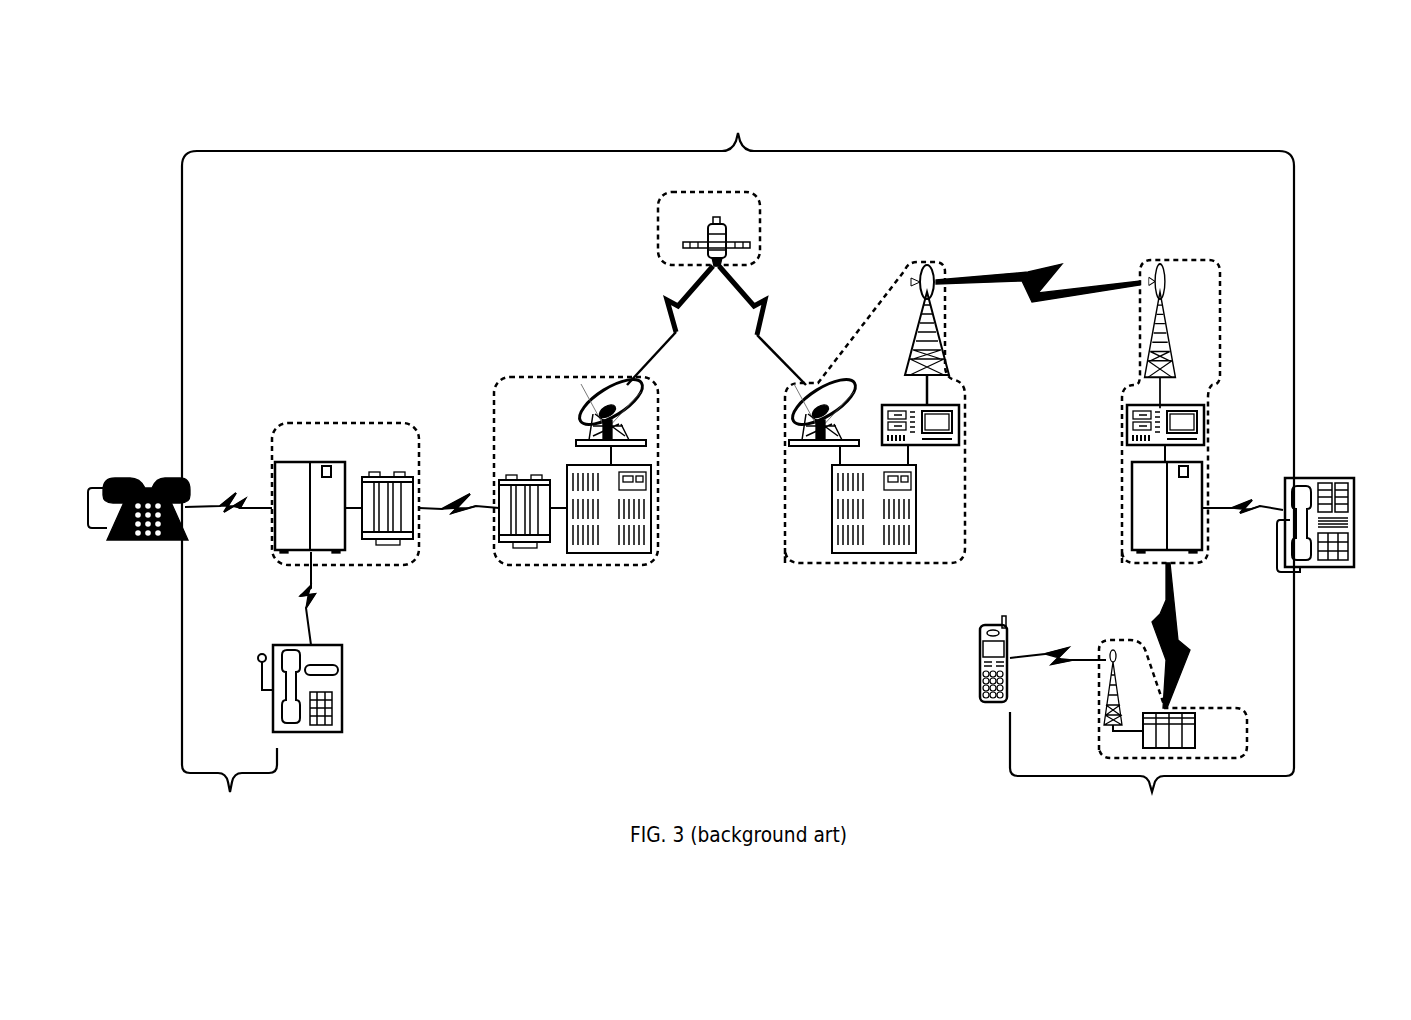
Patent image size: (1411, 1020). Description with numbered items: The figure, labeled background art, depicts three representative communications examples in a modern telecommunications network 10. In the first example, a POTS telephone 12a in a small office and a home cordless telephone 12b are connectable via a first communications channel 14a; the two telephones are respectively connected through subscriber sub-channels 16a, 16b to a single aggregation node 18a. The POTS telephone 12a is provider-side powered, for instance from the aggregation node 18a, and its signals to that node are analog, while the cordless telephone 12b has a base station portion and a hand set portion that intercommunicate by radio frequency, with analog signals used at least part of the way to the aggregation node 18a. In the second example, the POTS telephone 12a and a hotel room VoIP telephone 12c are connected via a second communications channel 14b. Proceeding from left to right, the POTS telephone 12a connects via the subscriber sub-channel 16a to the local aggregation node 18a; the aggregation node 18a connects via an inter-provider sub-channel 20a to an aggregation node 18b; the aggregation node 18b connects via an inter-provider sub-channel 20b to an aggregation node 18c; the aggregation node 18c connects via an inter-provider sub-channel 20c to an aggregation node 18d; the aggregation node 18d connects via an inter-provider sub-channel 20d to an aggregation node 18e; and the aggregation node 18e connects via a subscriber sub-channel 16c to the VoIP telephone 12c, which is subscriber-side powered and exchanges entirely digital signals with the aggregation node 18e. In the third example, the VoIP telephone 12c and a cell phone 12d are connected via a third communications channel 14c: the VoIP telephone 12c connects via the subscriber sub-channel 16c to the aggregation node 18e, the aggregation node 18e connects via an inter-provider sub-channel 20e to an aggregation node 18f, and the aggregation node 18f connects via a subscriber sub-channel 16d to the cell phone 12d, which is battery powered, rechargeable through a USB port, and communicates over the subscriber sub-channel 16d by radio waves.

The telecommunications network 10 is at (1331, 90).
The POTS telephone 12a is at (148, 540).
The cordless telephone 12b is at (310, 732).
The VoIP telephone 12c is at (1318, 567).
The cell phone 12d is at (993, 625).
The first communications channel 14a is at (229, 493).
The second communications channel 14b is at (738, 138).
The third communications channel 14c is at (1152, 493).
The subscriber sub-channel 16a is at (230, 515).
The subscriber sub-channel 16b is at (318, 600).
The subscriber sub-channel 16c is at (1246, 518).
The subscriber sub-channel 16d is at (1060, 650).
The aggregation node 18a is at (365, 449).
The aggregation node 18b is at (545, 434).
The aggregation node 18c is at (703, 225).
The aggregation node 18d is at (894, 376).
The aggregation node 18e is at (1213, 294).
The aggregation node 18f is at (1239, 744).
The inter-provider sub-channel 20a is at (456, 520).
The inter-provider sub-channel 20b is at (682, 338).
The inter-provider sub-channel 20c is at (757, 337).
The inter-provider sub-channel 20d is at (1042, 300).
The inter-provider sub-channel 20e is at (1188, 650).